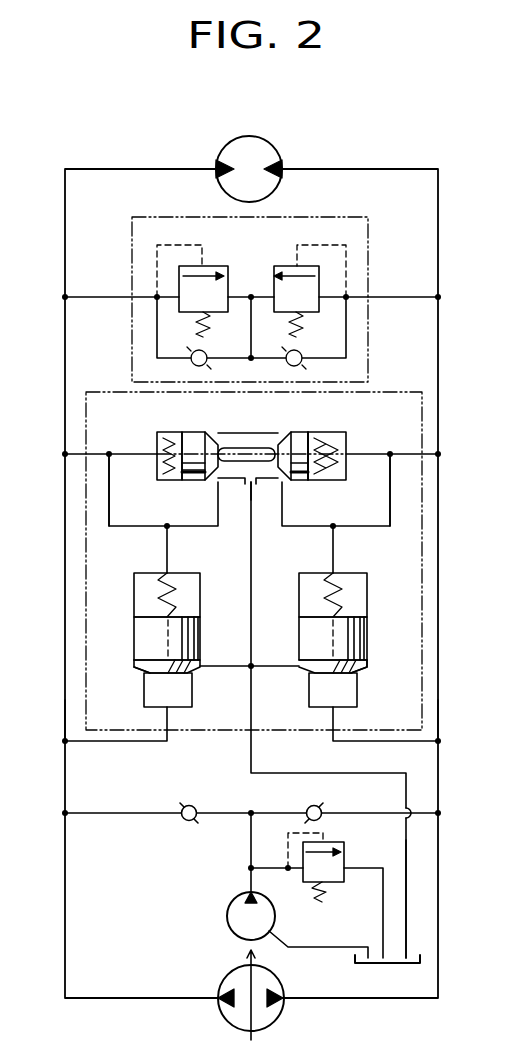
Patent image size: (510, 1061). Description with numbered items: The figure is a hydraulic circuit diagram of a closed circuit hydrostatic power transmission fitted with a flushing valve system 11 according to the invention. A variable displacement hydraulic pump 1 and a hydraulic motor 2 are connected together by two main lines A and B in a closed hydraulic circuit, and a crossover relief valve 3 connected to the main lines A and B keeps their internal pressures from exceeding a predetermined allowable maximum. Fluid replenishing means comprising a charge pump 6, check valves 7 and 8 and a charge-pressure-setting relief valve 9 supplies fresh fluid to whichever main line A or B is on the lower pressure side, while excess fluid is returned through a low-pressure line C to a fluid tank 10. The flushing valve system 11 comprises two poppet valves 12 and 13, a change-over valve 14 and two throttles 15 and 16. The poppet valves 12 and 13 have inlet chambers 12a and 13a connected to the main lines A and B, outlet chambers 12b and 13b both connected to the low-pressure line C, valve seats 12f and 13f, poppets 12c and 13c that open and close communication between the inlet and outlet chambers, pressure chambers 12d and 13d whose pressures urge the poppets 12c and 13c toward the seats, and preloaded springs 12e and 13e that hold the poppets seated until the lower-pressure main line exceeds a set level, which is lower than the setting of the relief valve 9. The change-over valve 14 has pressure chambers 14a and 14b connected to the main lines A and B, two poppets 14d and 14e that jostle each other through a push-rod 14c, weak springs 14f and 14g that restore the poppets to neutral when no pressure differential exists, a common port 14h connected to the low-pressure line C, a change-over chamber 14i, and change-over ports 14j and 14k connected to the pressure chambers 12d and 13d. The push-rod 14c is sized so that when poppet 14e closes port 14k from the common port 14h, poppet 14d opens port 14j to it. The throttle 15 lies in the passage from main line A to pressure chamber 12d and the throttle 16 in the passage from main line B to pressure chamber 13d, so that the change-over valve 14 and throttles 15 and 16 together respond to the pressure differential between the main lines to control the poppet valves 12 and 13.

The variable displacement hydraulic pump 1 is at (228, 1022).
The hydraulic motor 2 is at (278, 153).
The crossover relief valve 3 is at (368, 247).
The charge pump 6 is at (227, 912).
The check valve 7 is at (187, 803).
The check valve 8 is at (320, 805).
The charge-pressure-setting relief valve 9 is at (317, 893).
The fluid tank 10 is at (377, 967).
The flushing valve system 11 is at (395, 382).
The poppet valve 12 is at (167, 634).
The inlet chamber 12a is at (180, 697).
The outlet chamber 12b is at (197, 673).
The poppet 12c is at (197, 640).
The pressure chamber 12d is at (193, 610).
The spring 12e is at (173, 573).
The valve seat 12f is at (142, 670).
The poppet valve 13 is at (335, 634).
The inlet chamber 13a is at (318, 698).
The outlet chamber 13b is at (303, 672).
The poppet 13c is at (307, 632).
The pressure chamber 13d is at (307, 593).
The spring 13e is at (337, 573).
The valve seat 13f is at (361, 670).
The change-over valve 14 is at (245, 473).
The pressure chamber 14a is at (168, 438).
The pressure chamber 14b is at (342, 437).
The push-rod 14c is at (260, 448).
The poppet 14d is at (195, 440).
The poppet 14e is at (302, 440).
The weak spring 14f is at (157, 467).
The weak spring 14g is at (345, 463).
The common port 14h is at (255, 481).
The change-over chamber 14i is at (247, 438).
The change-over port 14j is at (217, 480).
The change-over port 14k is at (280, 480).
The throttle 15 is at (109, 500).
The throttle 16 is at (392, 496).
The main line A is at (65, 685).
The main line B is at (438, 683).
The low-pressure line C is at (407, 878).